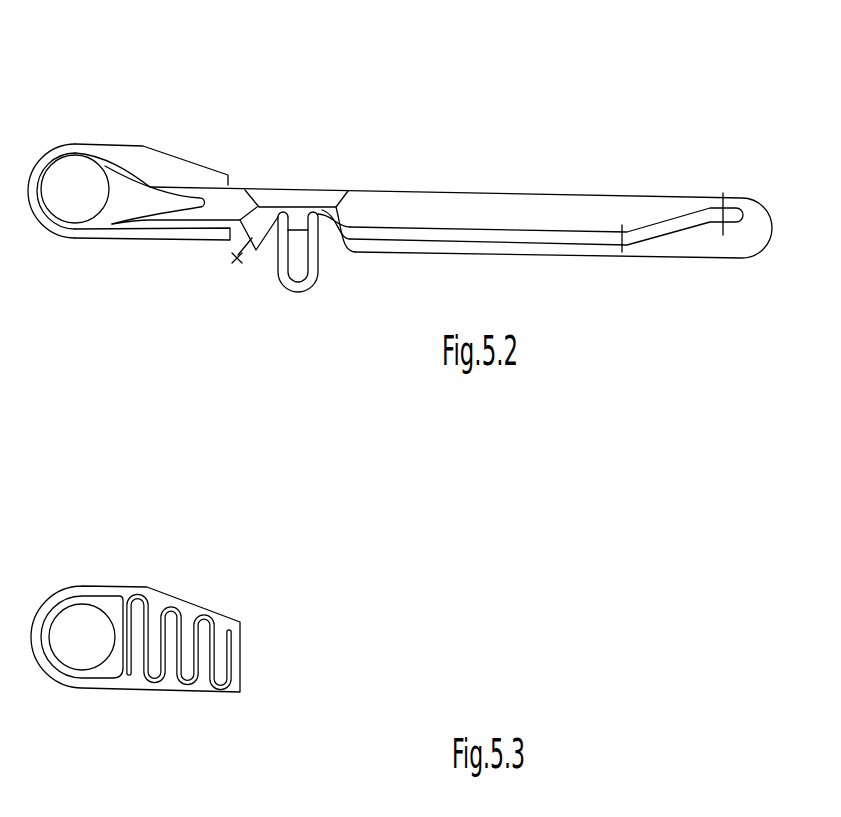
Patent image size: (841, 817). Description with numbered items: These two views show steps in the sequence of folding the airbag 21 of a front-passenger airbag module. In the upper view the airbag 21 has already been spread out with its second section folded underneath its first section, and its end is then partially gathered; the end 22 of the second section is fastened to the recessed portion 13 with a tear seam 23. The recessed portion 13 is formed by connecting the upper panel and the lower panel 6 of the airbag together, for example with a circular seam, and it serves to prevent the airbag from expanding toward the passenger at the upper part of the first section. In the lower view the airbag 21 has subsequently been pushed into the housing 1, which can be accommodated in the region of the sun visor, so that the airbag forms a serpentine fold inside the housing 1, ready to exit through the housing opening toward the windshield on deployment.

In FIG. 5.3, the housing 1 is at (172, 600).
In FIG. 5.2, the lower panel 6 is at (296, 293).
In FIG. 5.2, the recessed portion 13 is at (306, 205).
In FIG. 5.3, the airbag 21 is at (240, 635).
In FIG. 5.2, the end of the second section 22 is at (247, 262).
In FIG. 5.2, the tear seam 23 is at (282, 210).